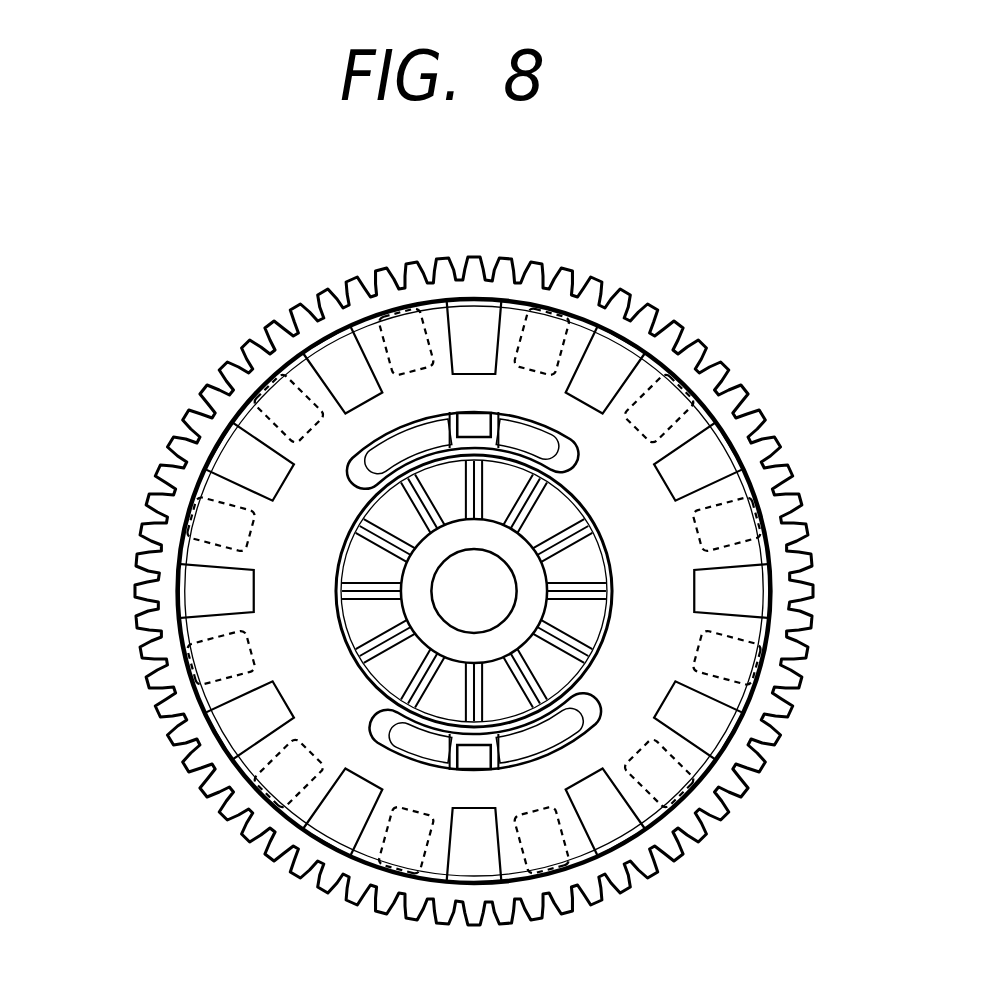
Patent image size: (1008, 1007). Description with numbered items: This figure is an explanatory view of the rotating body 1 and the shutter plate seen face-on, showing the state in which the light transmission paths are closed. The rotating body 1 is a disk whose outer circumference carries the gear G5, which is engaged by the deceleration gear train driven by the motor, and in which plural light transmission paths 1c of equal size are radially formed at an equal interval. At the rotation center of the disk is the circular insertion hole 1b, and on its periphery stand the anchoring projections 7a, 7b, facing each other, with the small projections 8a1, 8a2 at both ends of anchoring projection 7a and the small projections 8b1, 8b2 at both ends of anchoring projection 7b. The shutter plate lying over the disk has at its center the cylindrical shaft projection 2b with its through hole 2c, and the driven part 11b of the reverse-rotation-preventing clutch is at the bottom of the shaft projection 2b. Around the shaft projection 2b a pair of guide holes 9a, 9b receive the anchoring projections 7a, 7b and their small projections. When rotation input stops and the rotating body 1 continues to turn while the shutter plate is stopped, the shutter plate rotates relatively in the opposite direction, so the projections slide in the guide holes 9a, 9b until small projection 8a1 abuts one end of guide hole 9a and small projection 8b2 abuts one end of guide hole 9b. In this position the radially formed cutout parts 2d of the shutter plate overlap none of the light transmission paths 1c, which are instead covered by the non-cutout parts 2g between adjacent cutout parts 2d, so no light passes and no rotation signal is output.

The rotating body 1 is at (732, 360).
The insertion hole 1b is at (556, 500).
The light transmission paths 1c is at (165, 707).
The shaft projection 2b is at (417, 608).
The through hole 2c is at (505, 575).
The cutout parts 2d is at (218, 615).
The non-cutout parts 2g is at (233, 628).
The anchoring projection 7a is at (470, 418).
The anchoring projection 7b is at (470, 762).
The small projection 8a1 is at (540, 430).
The small projection 8a2 is at (407, 440).
The small projection 8b1 is at (535, 748).
The small projection 8b2 is at (410, 745).
The guide hole 9a is at (357, 453).
The guide hole 9b is at (583, 715).
The driven part 11b is at (372, 570).
The gear G5 is at (790, 462).